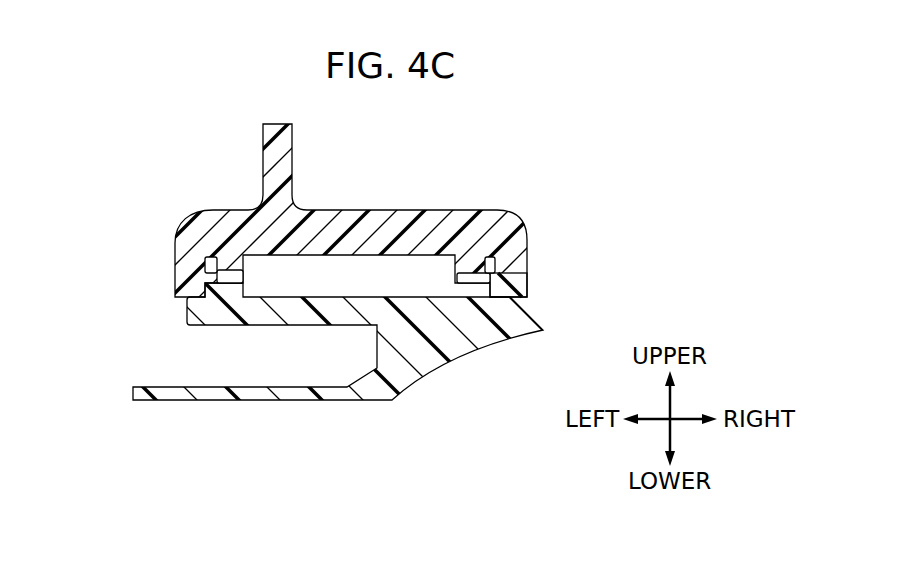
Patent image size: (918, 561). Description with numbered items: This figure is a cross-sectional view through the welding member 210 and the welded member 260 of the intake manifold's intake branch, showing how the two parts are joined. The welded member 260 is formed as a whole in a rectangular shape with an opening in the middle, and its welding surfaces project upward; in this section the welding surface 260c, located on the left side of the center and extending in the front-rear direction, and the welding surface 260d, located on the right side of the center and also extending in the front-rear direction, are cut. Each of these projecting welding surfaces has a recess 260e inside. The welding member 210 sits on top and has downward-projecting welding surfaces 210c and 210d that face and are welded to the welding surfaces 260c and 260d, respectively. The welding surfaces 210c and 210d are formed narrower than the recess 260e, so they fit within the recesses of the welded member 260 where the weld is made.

The welding member 210 is at (393, 210).
The welding surface 210c is at (490, 265).
The welding surface 210d is at (205, 258).
The welded member 260 is at (457, 358).
The welding surface 260c is at (492, 280).
The welding surface 260d is at (205, 295).
The recess 260e is at (472, 278).